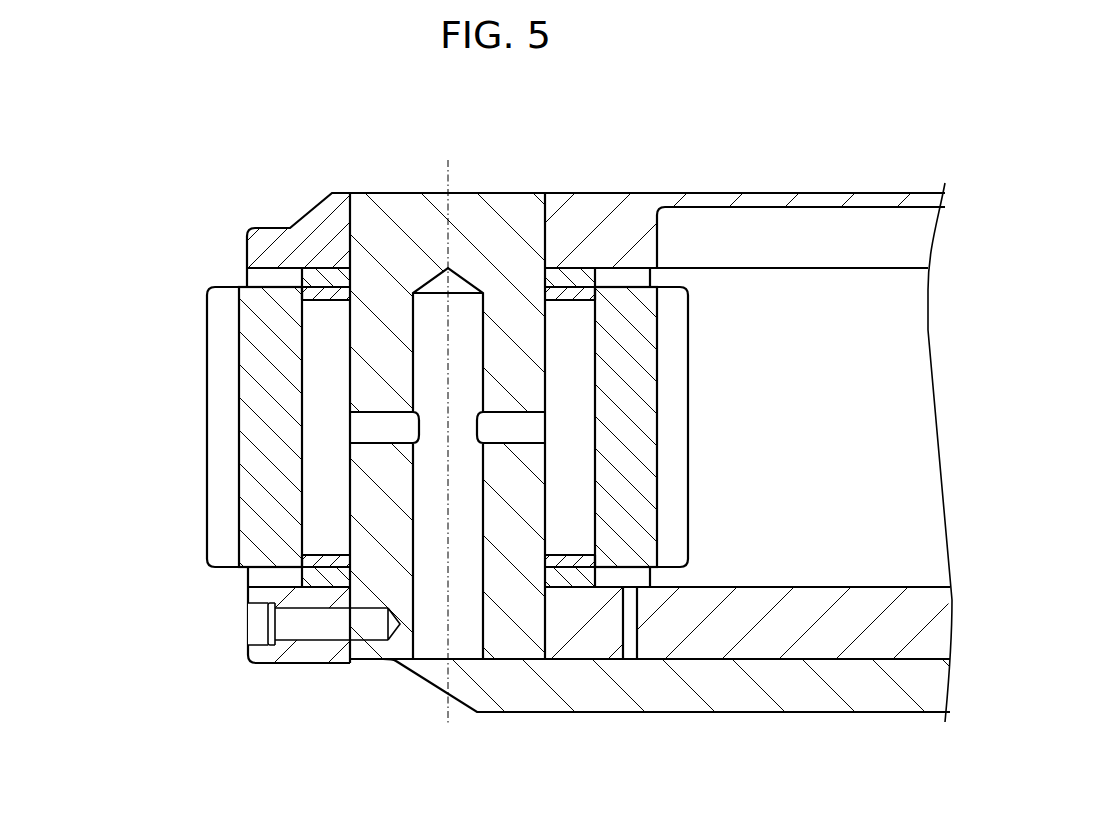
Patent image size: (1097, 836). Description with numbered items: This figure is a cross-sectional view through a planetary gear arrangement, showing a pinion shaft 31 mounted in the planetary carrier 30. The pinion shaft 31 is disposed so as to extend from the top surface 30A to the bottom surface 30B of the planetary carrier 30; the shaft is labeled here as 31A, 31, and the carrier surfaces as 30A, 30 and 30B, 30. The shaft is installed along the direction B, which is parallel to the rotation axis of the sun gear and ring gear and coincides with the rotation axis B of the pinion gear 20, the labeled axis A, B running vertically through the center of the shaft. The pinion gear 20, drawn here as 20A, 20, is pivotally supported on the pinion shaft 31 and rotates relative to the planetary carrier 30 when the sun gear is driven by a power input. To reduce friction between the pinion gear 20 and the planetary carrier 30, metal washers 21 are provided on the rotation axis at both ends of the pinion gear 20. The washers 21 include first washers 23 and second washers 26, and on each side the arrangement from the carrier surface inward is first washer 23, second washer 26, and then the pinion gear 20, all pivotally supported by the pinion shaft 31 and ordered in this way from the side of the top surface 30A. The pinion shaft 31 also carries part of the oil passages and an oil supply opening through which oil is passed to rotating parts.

The pinion gear 20 is at (453, 427).
The ring body portion of rotor 20A is at (262, 418).
The washer 21 is at (322, 430).
The first washer 23 is at (310, 277).
The second washer 26 is at (305, 294).
The planetary carrier 30 is at (621, 458).
The top surface 30A is at (303, 236).
The bottom surface 30B is at (596, 650).
The pinion shaft 31 is at (499, 480).
The support block portion 31A is at (380, 592).
The axis A is at (489, 435).
The direction / rotation axis B is at (450, 186).